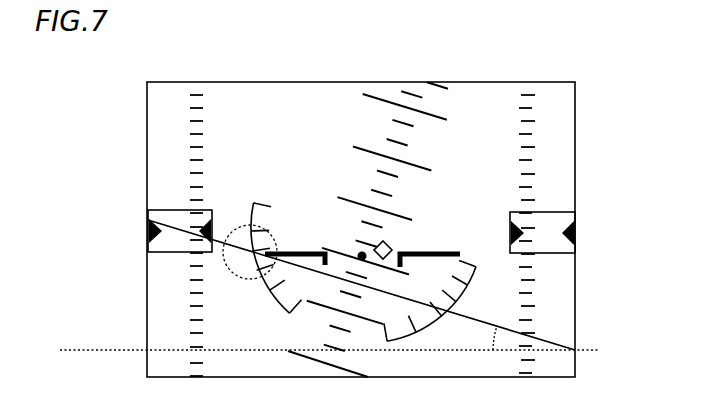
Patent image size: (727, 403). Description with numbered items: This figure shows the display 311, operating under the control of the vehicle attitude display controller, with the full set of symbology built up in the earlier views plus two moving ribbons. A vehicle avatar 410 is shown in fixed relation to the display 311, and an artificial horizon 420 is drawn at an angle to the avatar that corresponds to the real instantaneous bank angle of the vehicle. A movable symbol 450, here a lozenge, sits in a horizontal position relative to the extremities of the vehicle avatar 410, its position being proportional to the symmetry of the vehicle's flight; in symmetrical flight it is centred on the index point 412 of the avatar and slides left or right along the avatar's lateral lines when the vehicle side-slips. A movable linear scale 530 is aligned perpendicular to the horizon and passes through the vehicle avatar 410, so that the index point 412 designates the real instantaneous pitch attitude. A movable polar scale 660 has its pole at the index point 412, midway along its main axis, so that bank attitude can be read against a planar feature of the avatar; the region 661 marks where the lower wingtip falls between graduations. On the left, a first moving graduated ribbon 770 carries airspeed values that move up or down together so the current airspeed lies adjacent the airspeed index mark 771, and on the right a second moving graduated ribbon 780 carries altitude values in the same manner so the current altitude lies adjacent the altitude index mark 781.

The display 311 is at (466, 72).
The first moving graduated ribbon 770 is at (179, 72).
The airspeed index mark 771 is at (138, 232).
The second moving graduated ribbon 780 is at (548, 72).
The altitude index mark 781 is at (586, 237).
The artificial horizon 420 is at (492, 314).
The movable linear scale 530 is at (403, 185).
The vehicle avatar 410 is at (468, 247).
The movable symbol 450 is at (400, 239).
The index point 412 is at (356, 248).
The movable polar scale 660 is at (472, 278).
The region of polar scale 661 is at (226, 214).